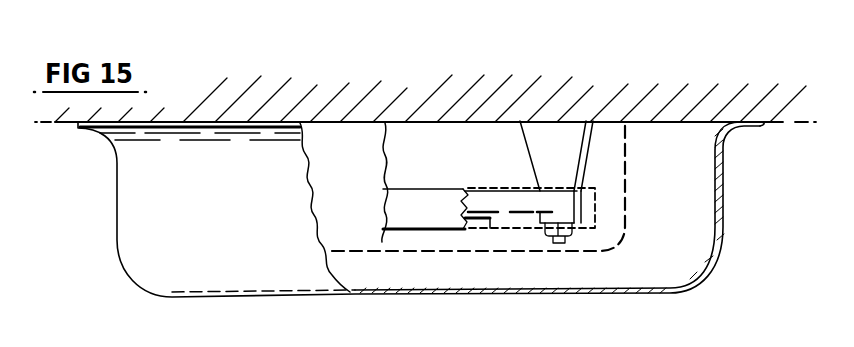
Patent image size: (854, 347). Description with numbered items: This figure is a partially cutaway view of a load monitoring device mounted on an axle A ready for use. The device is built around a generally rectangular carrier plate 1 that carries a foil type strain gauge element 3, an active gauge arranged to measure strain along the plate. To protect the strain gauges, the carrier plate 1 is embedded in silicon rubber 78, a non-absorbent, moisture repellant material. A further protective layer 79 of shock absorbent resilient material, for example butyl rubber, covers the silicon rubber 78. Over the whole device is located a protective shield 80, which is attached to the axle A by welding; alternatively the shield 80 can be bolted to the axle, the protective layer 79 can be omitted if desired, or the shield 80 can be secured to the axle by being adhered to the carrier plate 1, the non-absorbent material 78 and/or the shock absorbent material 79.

The ceiling structure A is at (397, 75).
The protective shield 80 is at (241, 228).
The protective layer 79 is at (372, 242).
The silicon rubber 78 is at (423, 192).
The carrier plate 1 is at (507, 203).
The strain gauge element 3 is at (489, 220).